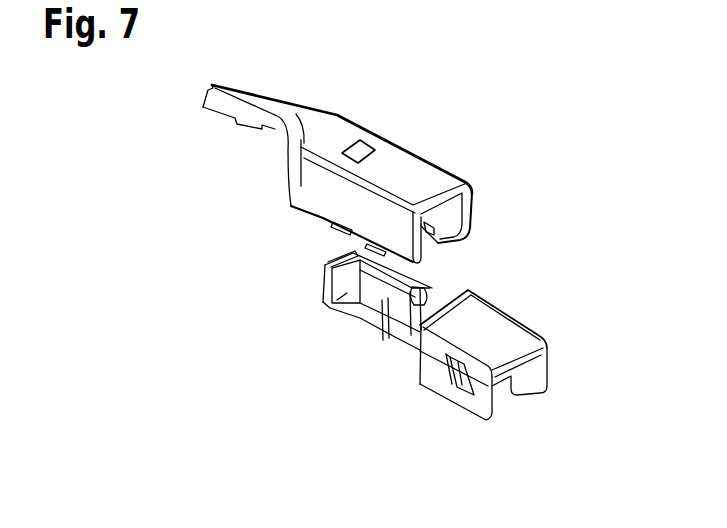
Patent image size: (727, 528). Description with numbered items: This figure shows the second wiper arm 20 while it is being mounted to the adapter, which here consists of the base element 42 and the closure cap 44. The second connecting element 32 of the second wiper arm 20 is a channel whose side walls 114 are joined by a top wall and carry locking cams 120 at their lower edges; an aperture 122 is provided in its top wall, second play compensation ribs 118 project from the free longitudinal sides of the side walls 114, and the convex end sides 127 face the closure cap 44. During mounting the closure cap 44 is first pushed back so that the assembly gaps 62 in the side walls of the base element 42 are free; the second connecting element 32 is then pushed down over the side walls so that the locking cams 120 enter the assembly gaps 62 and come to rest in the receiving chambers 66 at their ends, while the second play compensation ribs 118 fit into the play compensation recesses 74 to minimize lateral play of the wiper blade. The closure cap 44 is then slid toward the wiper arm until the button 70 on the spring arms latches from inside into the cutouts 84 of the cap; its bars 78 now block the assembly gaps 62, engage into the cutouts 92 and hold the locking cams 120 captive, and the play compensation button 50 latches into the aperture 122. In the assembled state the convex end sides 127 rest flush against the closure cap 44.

The second wiper arm 20 is at (377, 147).
The second connecting element 32 is at (248, 156).
The base element 42 is at (377, 324).
The closure cap 44 is at (509, 241).
The play compensation button 50 is at (350, 256).
The assembly gaps 62 is at (420, 288).
The receiving chambers 66 is at (390, 340).
The button 70 is at (450, 365).
The play compensation recesses 74 is at (343, 293).
The bars 78 is at (408, 340).
The cutouts 84 is at (470, 383).
The cutouts 92 is at (385, 340).
The side walls 114 is at (312, 183).
The second play compensation ribs 118 is at (340, 224).
The locking cams 120 is at (434, 236).
The aperture 122 is at (363, 148).
The convex end sides 127 is at (472, 193).